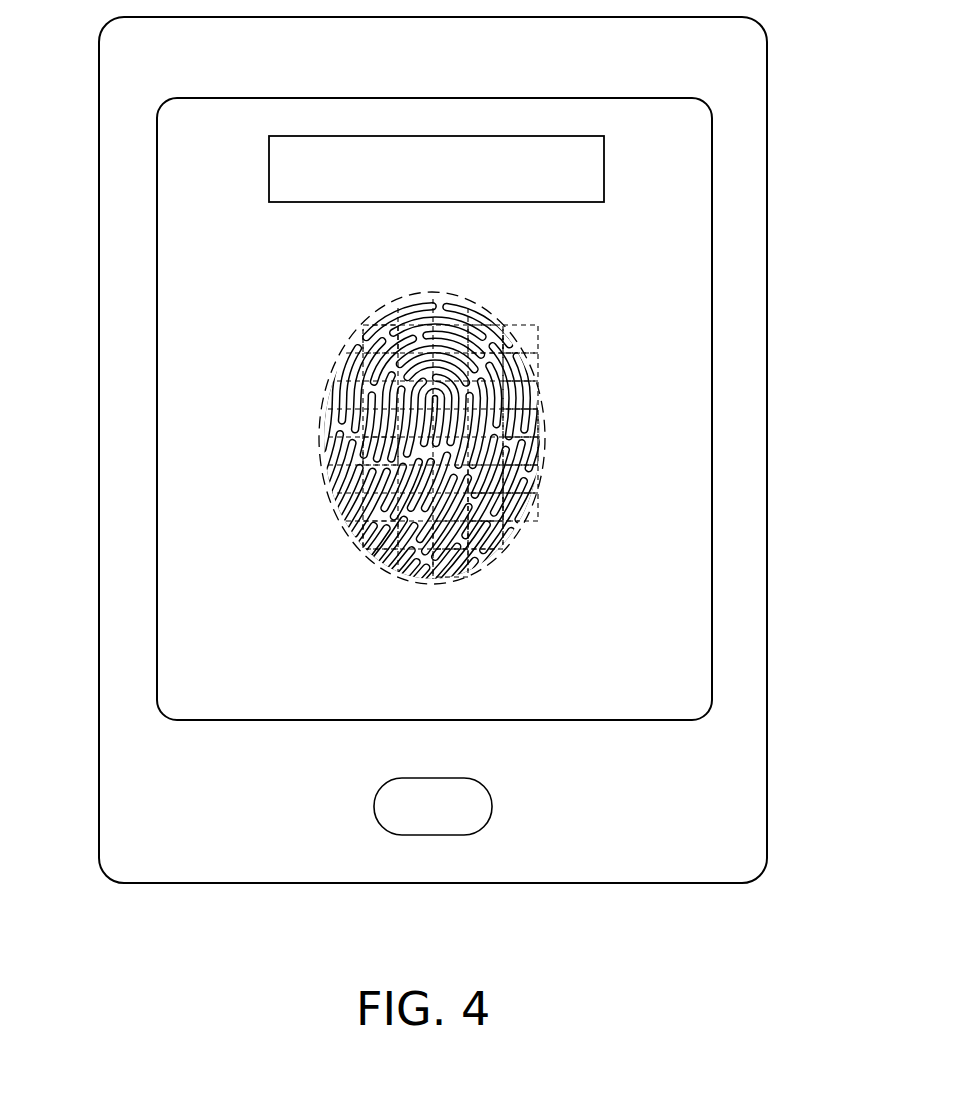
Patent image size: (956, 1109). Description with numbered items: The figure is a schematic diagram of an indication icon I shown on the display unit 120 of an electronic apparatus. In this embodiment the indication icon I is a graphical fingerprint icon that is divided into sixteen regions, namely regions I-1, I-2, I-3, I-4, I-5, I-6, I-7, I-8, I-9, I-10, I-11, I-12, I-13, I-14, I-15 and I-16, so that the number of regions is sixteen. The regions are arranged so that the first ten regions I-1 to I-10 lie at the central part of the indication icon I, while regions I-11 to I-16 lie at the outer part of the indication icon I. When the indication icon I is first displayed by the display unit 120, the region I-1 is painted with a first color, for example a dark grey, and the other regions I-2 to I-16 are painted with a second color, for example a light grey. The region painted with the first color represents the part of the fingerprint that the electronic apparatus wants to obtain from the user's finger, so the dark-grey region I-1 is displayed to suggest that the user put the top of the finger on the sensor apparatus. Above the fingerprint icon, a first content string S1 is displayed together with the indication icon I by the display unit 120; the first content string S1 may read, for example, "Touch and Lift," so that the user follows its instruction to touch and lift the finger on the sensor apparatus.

The first content string S1 is at (604, 170).
The display unit 120 is at (712, 198).
The indication icon I is at (430, 293).
The region I-1 is at (480, 303).
The region I-2 is at (538, 338).
The region I-3 is at (540, 368).
The region I-4 is at (540, 403).
The region I-5 is at (540, 422).
The region I-6 is at (540, 448).
The region I-7 is at (533, 493).
The region I-8 is at (530, 518).
The region I-9 is at (525, 537).
The region I-10 is at (447, 583).
The region I-11 is at (330, 349).
The region I-12 is at (315, 454).
The region I-13 is at (336, 534).
The region I-14 is at (540, 382).
The region I-15 is at (536, 470).
The region I-16 is at (516, 552).